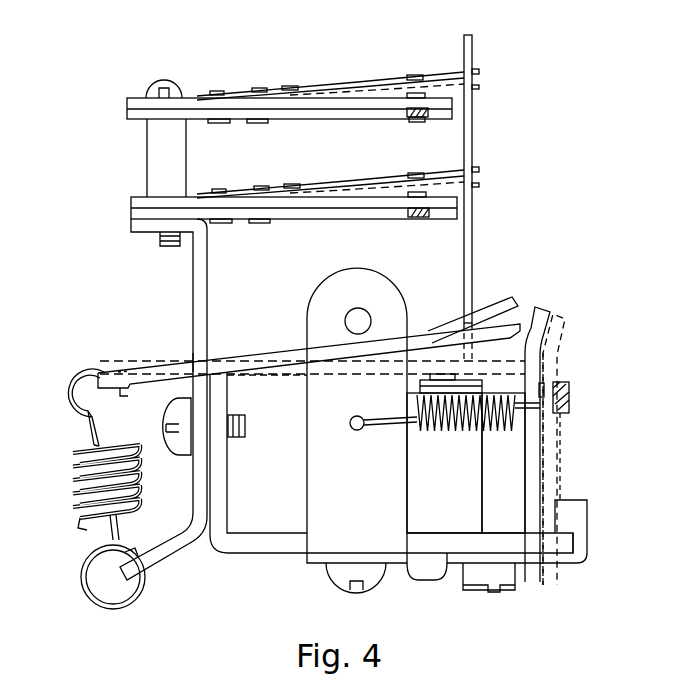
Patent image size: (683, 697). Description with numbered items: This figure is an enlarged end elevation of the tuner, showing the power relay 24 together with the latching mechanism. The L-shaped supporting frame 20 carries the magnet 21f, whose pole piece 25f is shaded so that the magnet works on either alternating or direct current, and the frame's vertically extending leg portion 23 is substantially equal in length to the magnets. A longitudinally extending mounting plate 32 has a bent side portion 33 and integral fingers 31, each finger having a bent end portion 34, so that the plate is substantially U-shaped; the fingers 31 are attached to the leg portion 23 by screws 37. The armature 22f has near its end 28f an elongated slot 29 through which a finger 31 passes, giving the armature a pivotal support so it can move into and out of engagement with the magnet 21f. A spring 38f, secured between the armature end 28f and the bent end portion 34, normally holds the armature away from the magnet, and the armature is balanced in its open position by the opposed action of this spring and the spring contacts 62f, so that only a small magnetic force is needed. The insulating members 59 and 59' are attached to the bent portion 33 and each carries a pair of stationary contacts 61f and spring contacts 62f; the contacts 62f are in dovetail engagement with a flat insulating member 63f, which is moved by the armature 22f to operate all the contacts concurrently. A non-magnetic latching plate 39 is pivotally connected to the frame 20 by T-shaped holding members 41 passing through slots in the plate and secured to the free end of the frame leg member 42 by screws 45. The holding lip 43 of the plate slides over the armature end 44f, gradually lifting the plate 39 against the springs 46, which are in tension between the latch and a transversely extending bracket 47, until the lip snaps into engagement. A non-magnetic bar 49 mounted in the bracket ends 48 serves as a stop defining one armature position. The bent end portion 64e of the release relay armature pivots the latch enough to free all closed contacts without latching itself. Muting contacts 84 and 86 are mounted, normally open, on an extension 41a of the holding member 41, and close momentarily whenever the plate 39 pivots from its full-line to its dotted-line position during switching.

The supporting frame 20 is at (280, 556).
The magnet 21f is at (470, 472).
The armature 22f is at (440, 338).
The leg portion 23 is at (221, 466).
The power relay 24 is at (192, 350).
The pole piece 25f is at (438, 372).
The armature end 28f is at (128, 366).
The elongated aperture or slot 29 is at (205, 370).
The finger 31 is at (199, 506).
The mounting plate 32 is at (216, 303).
The bent side portion 33 is at (150, 234).
The bent end portion 34 is at (170, 545).
The screw 37 is at (182, 448).
The spring 38f is at (74, 470).
The latching plate 39 is at (542, 447).
The T-shaped holding member 41 is at (552, 566).
The extension 41a is at (585, 533).
The frame leg member 42 is at (425, 548).
The holding lip 43 is at (548, 328).
The armature end 44f is at (527, 323).
The screw 45 is at (490, 580).
The spring 46 is at (462, 432).
The bracket 47 is at (398, 487).
The bracket end 48 is at (329, 290).
The non-magnetic bar 49 is at (358, 329).
The insulating member 59 is at (289, 138).
The insulating member 59' is at (297, 205).
The stationary contact 61f is at (420, 120).
The spring contact 62f is at (413, 74).
The flat insulating member 63f is at (472, 122).
The bent end portion 64e is at (508, 304).
The muting contact 84 is at (570, 390).
The muting contact 86 is at (544, 386).